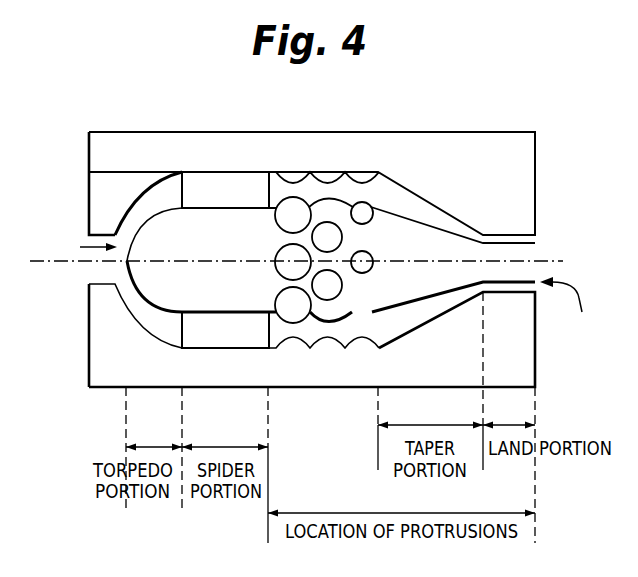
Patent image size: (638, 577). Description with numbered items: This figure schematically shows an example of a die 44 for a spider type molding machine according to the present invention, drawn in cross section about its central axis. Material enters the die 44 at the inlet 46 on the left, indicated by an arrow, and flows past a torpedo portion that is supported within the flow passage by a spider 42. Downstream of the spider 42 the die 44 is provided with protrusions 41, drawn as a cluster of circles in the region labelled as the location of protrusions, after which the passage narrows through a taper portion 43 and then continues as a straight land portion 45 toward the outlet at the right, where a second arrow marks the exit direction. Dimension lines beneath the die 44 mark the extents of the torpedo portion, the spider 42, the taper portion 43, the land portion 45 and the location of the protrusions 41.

The protrusions 41 is at (328, 236).
The spider 42 is at (234, 197).
The taper portion 43 is at (443, 230).
The die 44 is at (486, 186).
The land portion 45 is at (565, 304).
The inlet 46 is at (72, 247).